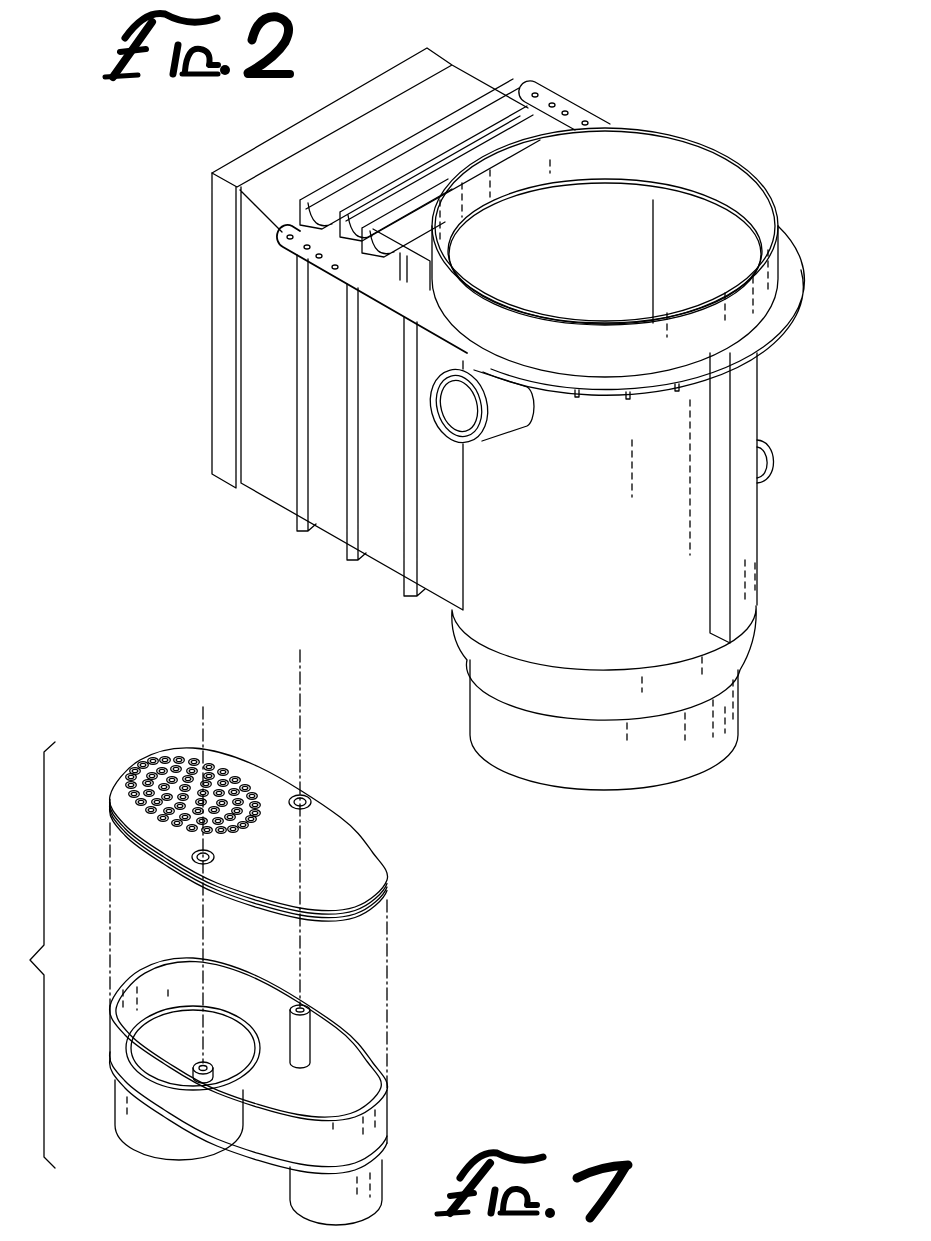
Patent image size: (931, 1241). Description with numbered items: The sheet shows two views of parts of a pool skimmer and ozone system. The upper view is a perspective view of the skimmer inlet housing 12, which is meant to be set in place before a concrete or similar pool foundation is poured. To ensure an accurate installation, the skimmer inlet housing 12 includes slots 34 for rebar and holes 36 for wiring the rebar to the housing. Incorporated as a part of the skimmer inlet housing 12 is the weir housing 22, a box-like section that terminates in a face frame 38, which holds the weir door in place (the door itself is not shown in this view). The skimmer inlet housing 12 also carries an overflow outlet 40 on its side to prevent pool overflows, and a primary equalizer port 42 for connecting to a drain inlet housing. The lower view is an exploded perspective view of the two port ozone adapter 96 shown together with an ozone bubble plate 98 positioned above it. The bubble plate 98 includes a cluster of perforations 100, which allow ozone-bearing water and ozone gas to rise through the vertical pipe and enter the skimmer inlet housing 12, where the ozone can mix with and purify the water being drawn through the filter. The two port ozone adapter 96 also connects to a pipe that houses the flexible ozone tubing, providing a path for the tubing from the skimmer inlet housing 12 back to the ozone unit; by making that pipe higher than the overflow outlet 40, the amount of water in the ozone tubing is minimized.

In FIG. 2, the skimmer inlet housing 12 is at (824, 332).
In FIG. 2, the weir housing 22 is at (329, 514).
In FIG. 2, the slots 34 is at (533, 93).
In FIG. 2, the holes 36 is at (279, 238).
In FIG. 2, the face frame 38 is at (371, 95).
In FIG. 2, the overflow outlet 40 is at (477, 433).
In FIG. 2, the primary equalizer port 42 is at (768, 443).
In FIG. 7, the two port ozone adapter 96 is at (203, 1105).
In FIG. 7, the ozone bubble plate 98 is at (340, 852).
In FIG. 7, the perforations 100 is at (147, 770).